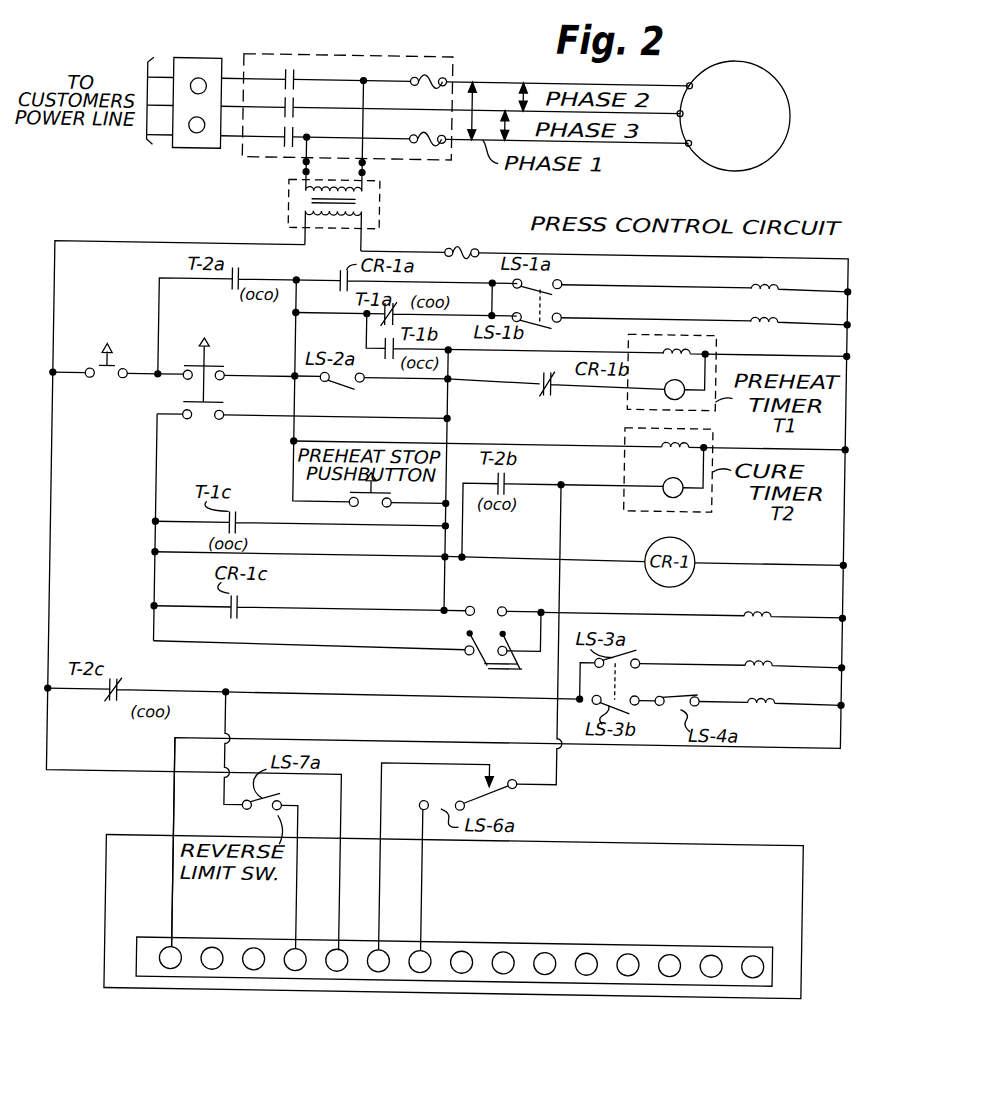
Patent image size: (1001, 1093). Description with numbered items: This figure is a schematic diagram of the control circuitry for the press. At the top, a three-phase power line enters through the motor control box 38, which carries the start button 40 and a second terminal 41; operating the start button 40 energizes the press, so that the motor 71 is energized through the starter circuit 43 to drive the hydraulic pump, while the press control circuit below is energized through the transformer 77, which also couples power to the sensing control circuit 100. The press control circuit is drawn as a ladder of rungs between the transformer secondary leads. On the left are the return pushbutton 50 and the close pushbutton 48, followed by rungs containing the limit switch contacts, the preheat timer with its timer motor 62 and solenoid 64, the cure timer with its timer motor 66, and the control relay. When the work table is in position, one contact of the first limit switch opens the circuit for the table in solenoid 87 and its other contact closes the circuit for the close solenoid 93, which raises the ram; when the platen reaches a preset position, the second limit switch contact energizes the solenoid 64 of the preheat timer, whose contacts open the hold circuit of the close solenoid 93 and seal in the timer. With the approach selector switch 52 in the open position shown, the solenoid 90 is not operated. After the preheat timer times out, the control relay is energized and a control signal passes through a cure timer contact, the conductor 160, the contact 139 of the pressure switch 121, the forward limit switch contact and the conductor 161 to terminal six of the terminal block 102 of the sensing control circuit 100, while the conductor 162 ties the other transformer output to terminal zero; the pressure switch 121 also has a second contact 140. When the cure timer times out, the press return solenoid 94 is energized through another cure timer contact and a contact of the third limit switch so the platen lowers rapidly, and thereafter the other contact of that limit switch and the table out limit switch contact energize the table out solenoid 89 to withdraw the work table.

The motor control box 38 is at (183, 151).
The start button 40 is at (193, 82).
The power line terminal 41 is at (196, 135).
The starter circuit 43 is at (392, 57).
The transformer 77 is at (374, 203).
The motor 71 is at (778, 88).
The return pushbutton 50 is at (98, 358).
The close pushbutton 48 is at (207, 356).
The table in solenoid 87 is at (778, 286).
The close solenoid 93 is at (778, 319).
The solenoid 64 is at (697, 348).
The timer motor 62 is at (664, 393).
The timer motor 66 is at (668, 494).
The conductor 160 is at (558, 540).
The approach selector switch 52 is at (474, 656).
The solenoid 90 is at (774, 611).
The press return solenoid 94 is at (776, 660).
The table out solenoid 89 is at (766, 706).
The contact 140 is at (494, 765).
The contact 139 is at (492, 799).
The pressure switch 121 is at (524, 786).
The conductor 161 is at (430, 882).
The conductor 162 is at (179, 918).
The sensing control circuit 100 is at (453, 917).
The terminal block 102 is at (529, 949).